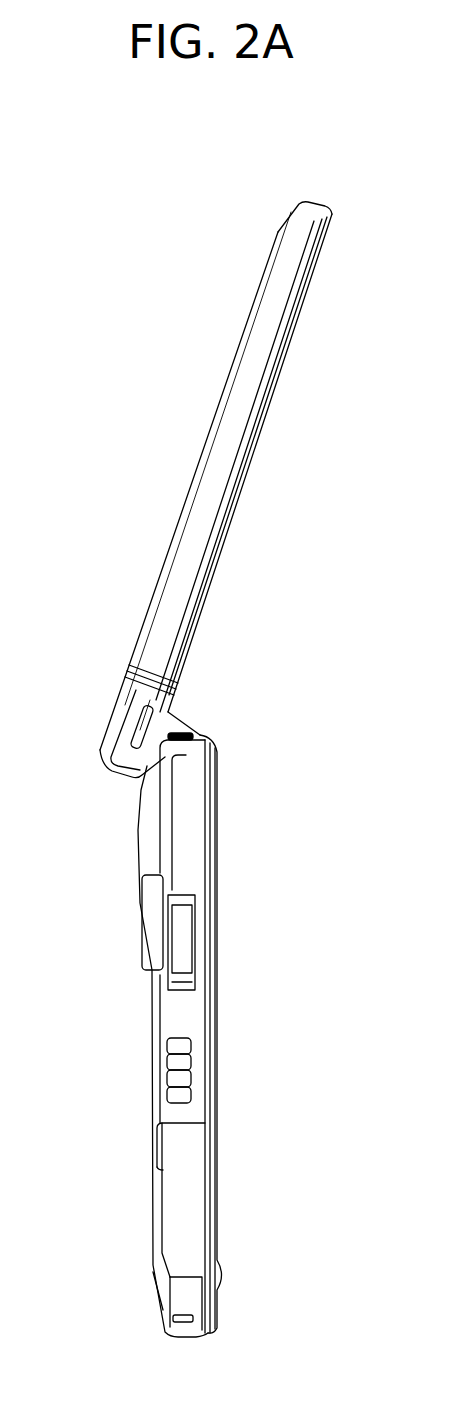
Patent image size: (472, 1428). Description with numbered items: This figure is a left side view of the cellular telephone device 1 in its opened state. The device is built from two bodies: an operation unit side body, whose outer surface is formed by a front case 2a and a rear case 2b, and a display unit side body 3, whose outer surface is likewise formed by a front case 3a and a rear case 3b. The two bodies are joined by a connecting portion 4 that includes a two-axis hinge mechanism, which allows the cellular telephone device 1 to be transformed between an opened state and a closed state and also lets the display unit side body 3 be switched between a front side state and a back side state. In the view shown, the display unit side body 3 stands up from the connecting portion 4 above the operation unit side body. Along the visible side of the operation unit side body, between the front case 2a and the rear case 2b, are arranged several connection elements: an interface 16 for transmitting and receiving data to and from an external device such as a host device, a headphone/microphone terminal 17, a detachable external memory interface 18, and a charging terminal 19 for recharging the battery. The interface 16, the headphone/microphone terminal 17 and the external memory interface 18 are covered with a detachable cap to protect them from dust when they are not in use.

The cellular telephone device 1 is at (340, 192).
The front case 2a is at (217, 823).
The rear case 2b is at (140, 800).
The display unit side body 3 is at (284, 457).
The front case 3a is at (308, 290).
The rear case 3b is at (266, 268).
The connecting portion 4 is at (200, 693).
The interface 16 is at (195, 1167).
The headphone/microphone terminal 17 is at (187, 935).
The external memory interface 18 is at (152, 928).
The charging terminal 19 is at (195, 1060).